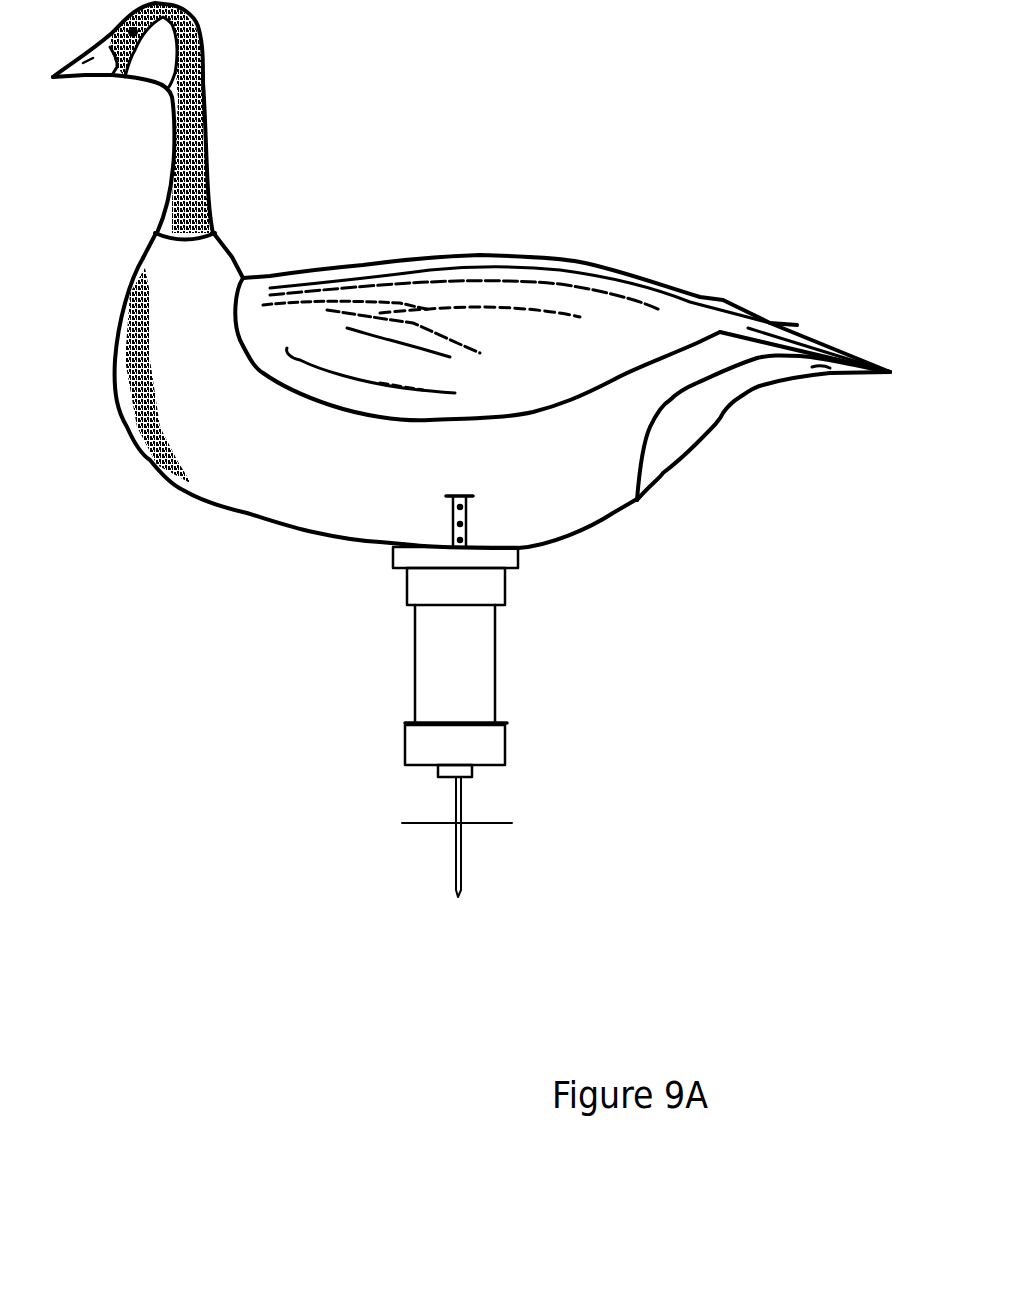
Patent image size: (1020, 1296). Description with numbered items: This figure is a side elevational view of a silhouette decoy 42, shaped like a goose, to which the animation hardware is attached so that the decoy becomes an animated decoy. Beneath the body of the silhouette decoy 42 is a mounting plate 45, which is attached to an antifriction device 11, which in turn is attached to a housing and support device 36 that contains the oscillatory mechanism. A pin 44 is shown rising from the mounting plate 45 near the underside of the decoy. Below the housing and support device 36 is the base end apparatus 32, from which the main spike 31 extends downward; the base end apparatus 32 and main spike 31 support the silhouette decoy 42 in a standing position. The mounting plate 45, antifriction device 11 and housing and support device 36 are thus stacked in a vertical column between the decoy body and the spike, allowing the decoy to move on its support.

The silhouette decoy 42 is at (224, 434).
The pin 44 is at (482, 524).
The mounting plate 45 is at (393, 554).
The antifriction device 11 is at (408, 585).
The housing and support device 36 is at (426, 664).
The base end apparatus 32 is at (494, 748).
The main spike 31 is at (476, 803).